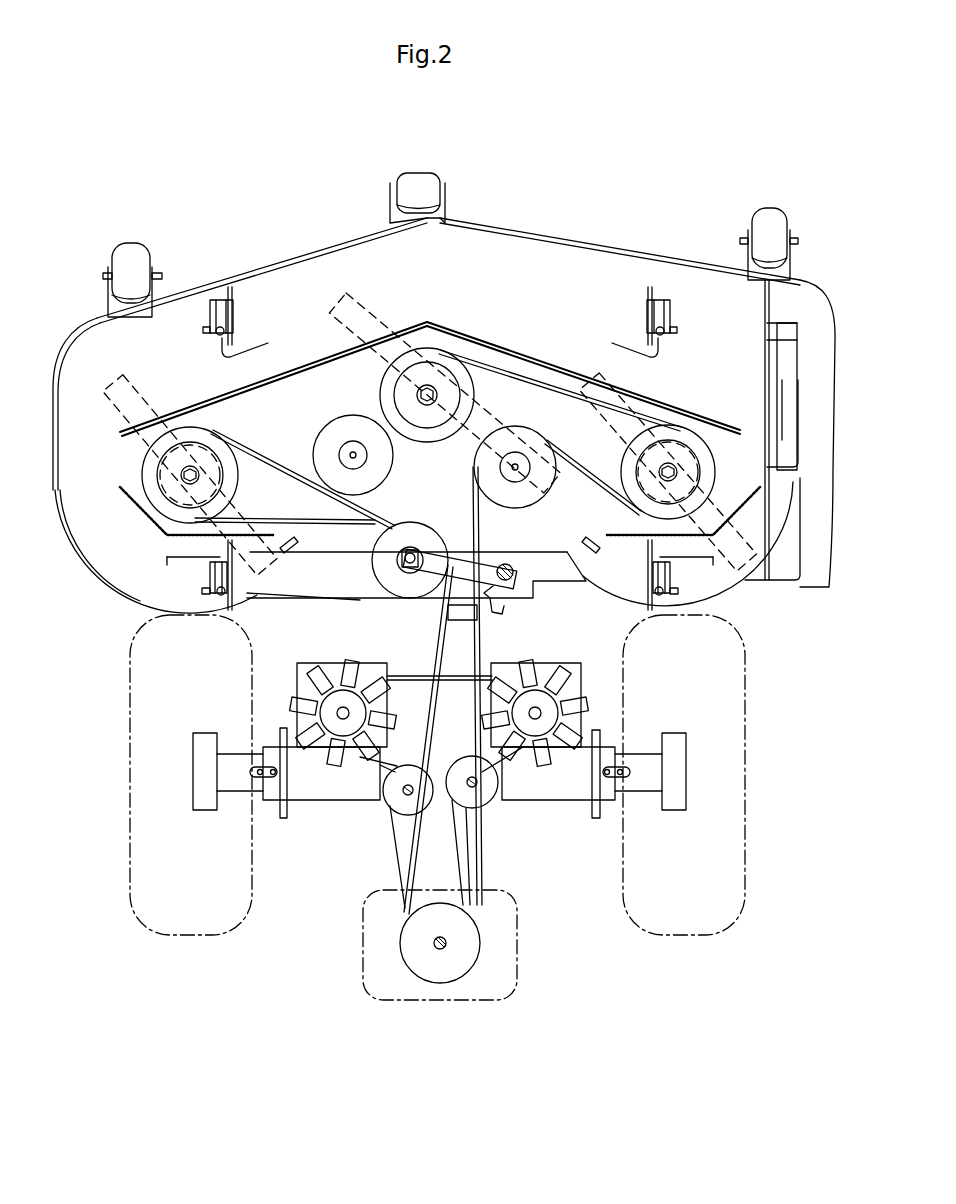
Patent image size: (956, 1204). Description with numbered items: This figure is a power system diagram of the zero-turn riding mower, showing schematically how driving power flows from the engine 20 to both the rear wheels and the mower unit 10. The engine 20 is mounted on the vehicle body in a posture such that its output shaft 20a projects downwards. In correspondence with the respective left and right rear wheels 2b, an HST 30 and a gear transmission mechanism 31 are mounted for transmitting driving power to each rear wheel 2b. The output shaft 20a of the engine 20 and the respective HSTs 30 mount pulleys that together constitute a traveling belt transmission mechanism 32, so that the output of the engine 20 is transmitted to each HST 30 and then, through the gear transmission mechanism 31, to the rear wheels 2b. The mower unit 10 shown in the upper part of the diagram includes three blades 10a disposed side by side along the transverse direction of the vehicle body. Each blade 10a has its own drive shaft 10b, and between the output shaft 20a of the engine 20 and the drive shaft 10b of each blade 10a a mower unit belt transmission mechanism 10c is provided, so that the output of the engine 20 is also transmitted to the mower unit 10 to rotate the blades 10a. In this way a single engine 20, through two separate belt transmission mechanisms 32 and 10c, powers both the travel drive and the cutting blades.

The mower unit 10 is at (272, 252).
The blade 10a is at (124, 380).
The drive shaft 10b is at (428, 392).
The mower unit belt transmission mechanism 10c is at (283, 460).
The HST (hydrostatic transmission) 30 is at (333, 663).
The gear transmission mechanism 31 is at (313, 797).
The traveling belt transmission mechanism 32 is at (413, 672).
The rear wheel 2b is at (128, 782).
The engine 20 is at (455, 1002).
The output shaft 20a is at (437, 945).